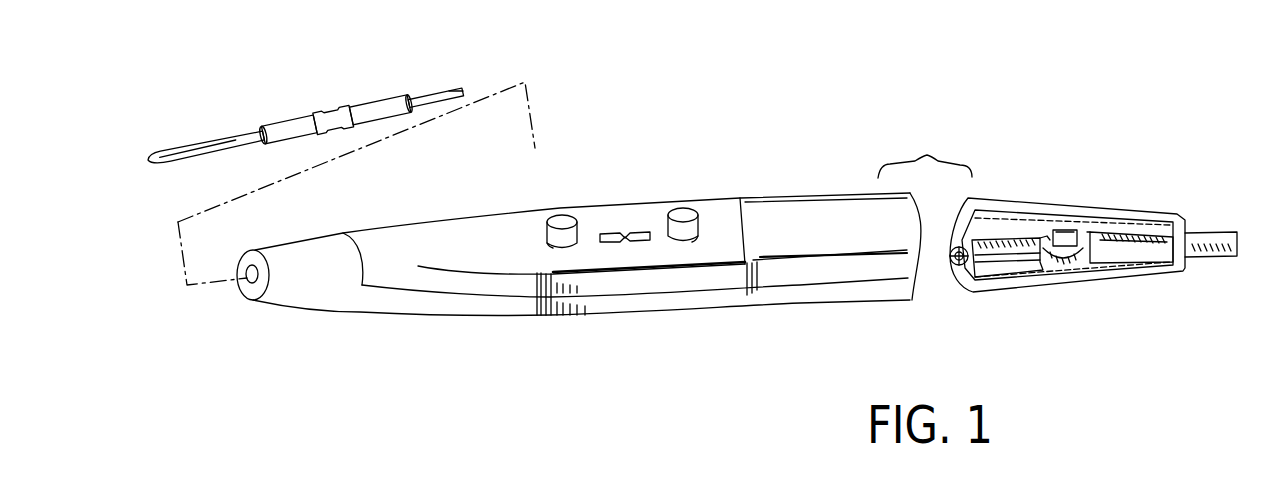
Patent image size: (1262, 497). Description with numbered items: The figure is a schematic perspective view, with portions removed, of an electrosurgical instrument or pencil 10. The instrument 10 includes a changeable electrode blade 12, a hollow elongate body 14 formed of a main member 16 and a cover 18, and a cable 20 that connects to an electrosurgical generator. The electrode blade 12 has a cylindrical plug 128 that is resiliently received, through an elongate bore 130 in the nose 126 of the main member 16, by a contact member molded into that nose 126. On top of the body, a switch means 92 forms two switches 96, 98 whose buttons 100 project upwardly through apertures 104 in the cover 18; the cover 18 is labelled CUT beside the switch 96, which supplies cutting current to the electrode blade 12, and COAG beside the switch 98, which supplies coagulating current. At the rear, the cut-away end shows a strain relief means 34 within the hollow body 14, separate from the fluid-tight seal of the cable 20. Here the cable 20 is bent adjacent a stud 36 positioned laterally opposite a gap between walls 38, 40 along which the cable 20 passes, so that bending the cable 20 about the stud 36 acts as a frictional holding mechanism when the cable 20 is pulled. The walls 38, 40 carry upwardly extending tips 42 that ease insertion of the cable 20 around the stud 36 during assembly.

The electrosurgical instrument 10 is at (789, 111).
The changeable electrode blade 12 is at (281, 114).
The hollow elongate body 14 is at (464, 324).
The main member 16 is at (500, 313).
The cover 18 is at (817, 200).
The cable 20 is at (1003, 243).
The strain relief means 34 is at (1073, 294).
The stud 36 is at (1077, 218).
The wall 38 is at (998, 265).
The wall 40 is at (1127, 258).
The upwardly extending tips 42 is at (1040, 236).
The switch means 92 is at (673, 177).
The switch 96 is at (549, 202).
The switch 98 is at (701, 200).
The buttons 100 is at (577, 210).
The apertures 104 is at (567, 247).
The nose 126 is at (358, 312).
The cylindrical plug 128 is at (449, 90).
The elongate bore 130 is at (253, 284).